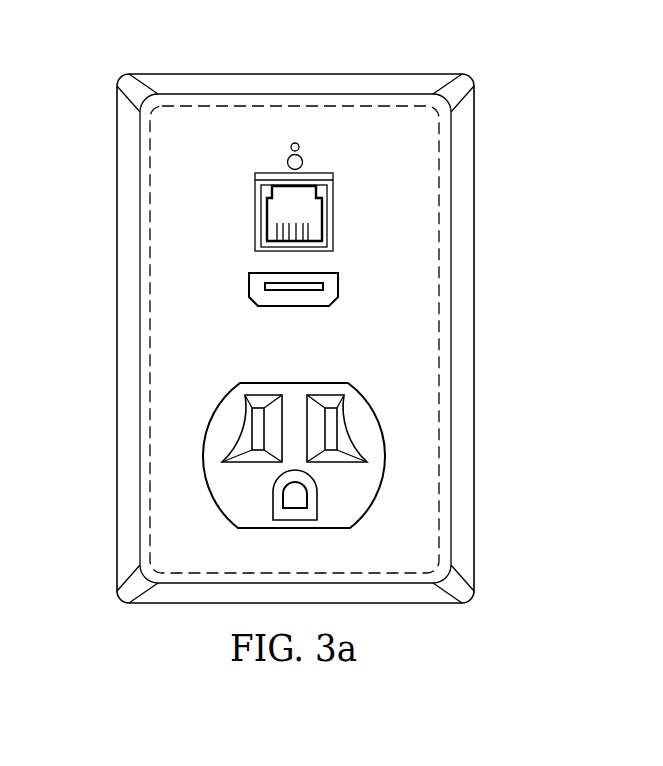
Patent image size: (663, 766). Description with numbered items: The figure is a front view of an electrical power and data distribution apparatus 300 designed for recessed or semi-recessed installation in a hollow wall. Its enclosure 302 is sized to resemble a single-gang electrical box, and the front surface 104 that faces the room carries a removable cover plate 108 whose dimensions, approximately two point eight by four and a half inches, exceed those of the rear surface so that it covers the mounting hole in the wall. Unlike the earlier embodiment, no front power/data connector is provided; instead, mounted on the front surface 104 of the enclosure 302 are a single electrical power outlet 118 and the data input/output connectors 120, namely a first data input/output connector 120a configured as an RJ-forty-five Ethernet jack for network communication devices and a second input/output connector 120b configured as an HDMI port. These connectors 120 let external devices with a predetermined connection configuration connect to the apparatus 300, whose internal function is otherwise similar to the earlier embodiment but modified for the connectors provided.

The distribution apparatus 300 is at (439, 55).
The front surface 104 is at (166, 333).
The cover plate 108 is at (463, 339).
The enclosure 302 is at (147, 387).
The electrical power outlet 118 is at (294, 383).
The data input/output connector 120 is at (243, 147).
The first data input/output connector 120a is at (335, 214).
The second input/output connector 120b is at (340, 283).